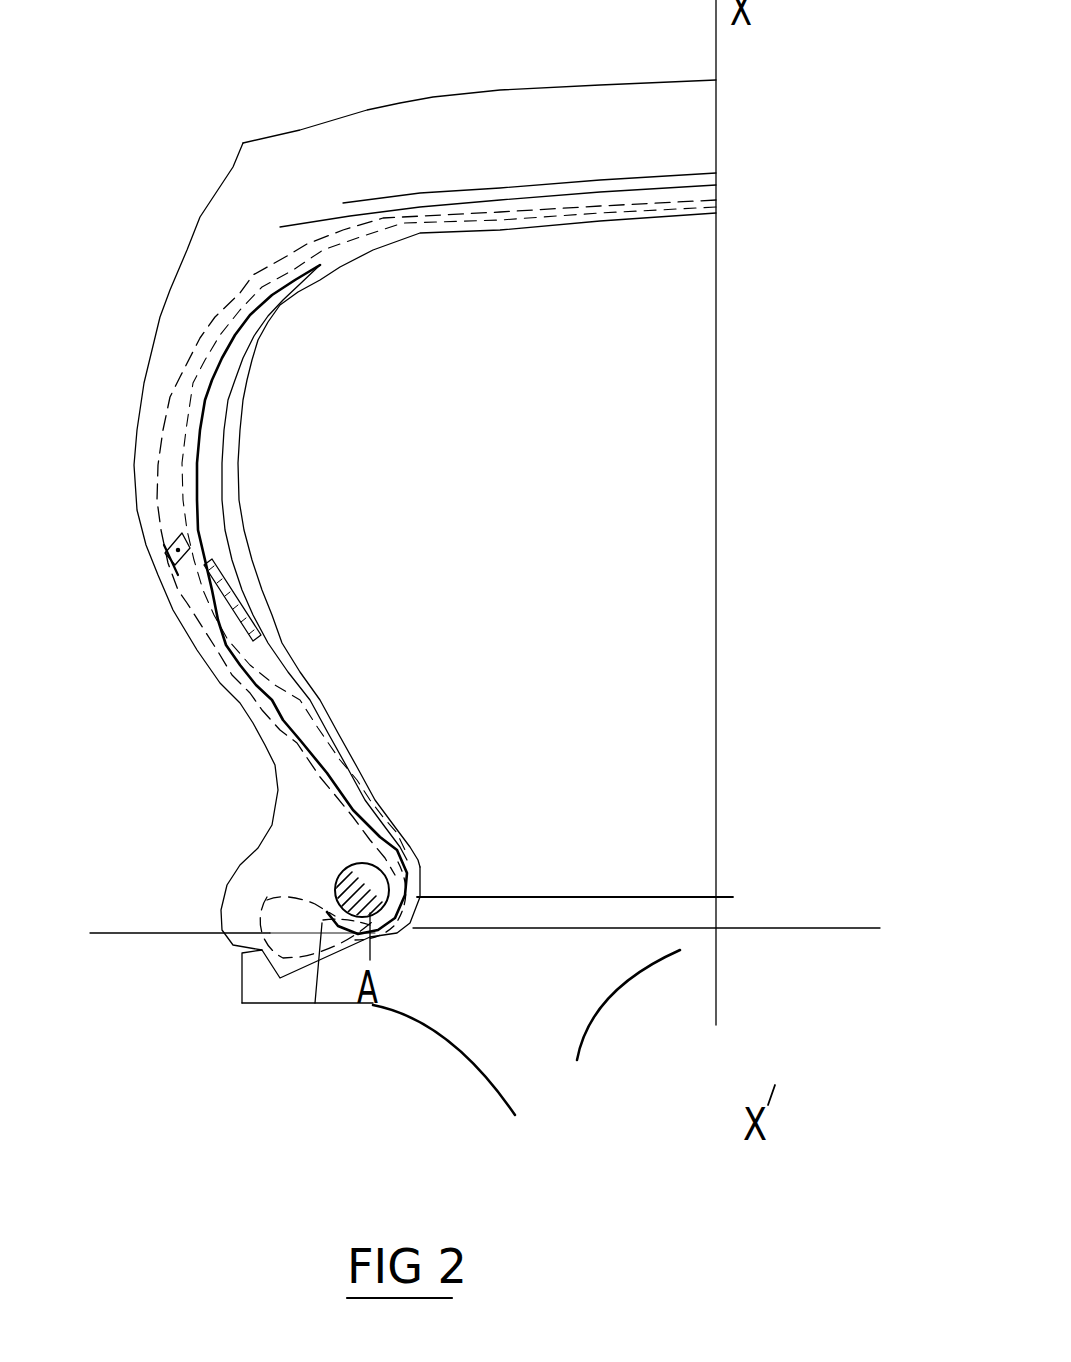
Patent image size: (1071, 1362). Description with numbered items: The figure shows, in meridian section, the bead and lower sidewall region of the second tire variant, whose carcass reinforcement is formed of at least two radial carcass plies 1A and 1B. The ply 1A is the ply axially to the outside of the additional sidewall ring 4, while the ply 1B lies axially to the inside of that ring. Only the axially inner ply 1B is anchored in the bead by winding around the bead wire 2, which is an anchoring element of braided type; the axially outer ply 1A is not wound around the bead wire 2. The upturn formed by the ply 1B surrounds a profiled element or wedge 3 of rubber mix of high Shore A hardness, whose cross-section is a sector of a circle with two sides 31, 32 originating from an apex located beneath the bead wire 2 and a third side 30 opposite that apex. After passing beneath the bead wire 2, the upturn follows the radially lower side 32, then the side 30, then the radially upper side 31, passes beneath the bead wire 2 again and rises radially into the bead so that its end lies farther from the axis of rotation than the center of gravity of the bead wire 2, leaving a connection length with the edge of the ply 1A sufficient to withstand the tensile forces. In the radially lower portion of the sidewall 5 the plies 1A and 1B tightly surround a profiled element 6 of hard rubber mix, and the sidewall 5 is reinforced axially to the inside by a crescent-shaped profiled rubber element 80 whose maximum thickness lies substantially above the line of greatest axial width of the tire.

The radial carcass ply 1A is at (258, 273).
The radial carcass ply 1B is at (183, 470).
The profiled rubber element 80 is at (217, 384).
The additional sidewall ring 4 is at (188, 560).
The sidewall 5 is at (160, 560).
The profiled element 6 is at (235, 648).
The bead wire 2 is at (385, 885).
The profiled element or wedge 3 is at (461, 1019).
The third side 30 is at (265, 917).
The radially outer side 31 is at (313, 907).
The radially inner side 32 is at (355, 950).